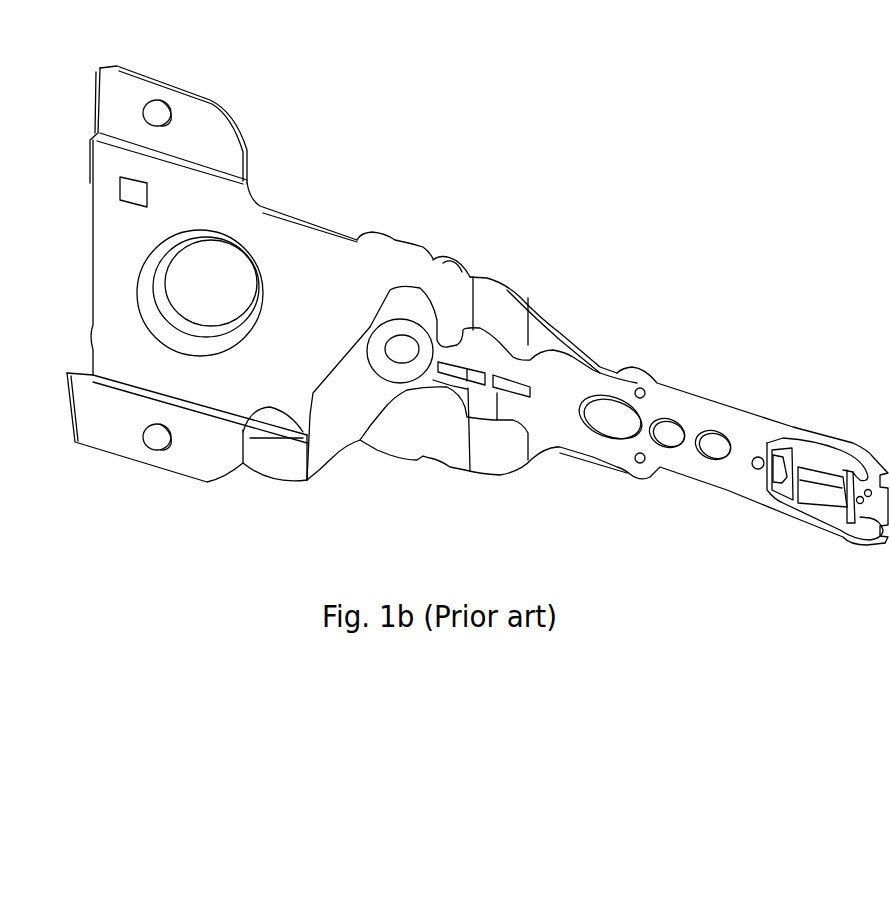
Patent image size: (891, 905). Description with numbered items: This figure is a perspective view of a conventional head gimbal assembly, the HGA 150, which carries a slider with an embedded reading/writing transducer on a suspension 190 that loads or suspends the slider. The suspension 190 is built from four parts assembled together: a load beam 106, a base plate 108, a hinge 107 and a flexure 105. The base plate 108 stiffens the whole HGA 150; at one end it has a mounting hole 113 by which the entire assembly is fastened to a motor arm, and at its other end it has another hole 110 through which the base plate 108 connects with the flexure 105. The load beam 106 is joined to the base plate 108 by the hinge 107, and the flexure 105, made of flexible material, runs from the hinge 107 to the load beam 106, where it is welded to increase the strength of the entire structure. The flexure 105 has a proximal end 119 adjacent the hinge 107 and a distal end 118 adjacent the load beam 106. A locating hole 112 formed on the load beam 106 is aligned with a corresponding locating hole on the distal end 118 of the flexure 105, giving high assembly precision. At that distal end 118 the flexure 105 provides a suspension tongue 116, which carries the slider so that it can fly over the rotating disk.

The HGA 150 is at (108, 28).
The suspension 190 is at (698, 190).
The base plate 108 is at (450, 258).
The hinge 107 is at (487, 295).
The load beam 106 is at (537, 340).
The flexure 105 is at (673, 410).
The proximal end 119 is at (117, 425).
The mounting hole 113 is at (207, 282).
The locating hole 112 is at (610, 415).
The hole 110 is at (713, 445).
The distal end 118 is at (763, 503).
The suspension tongue 116 is at (832, 495).